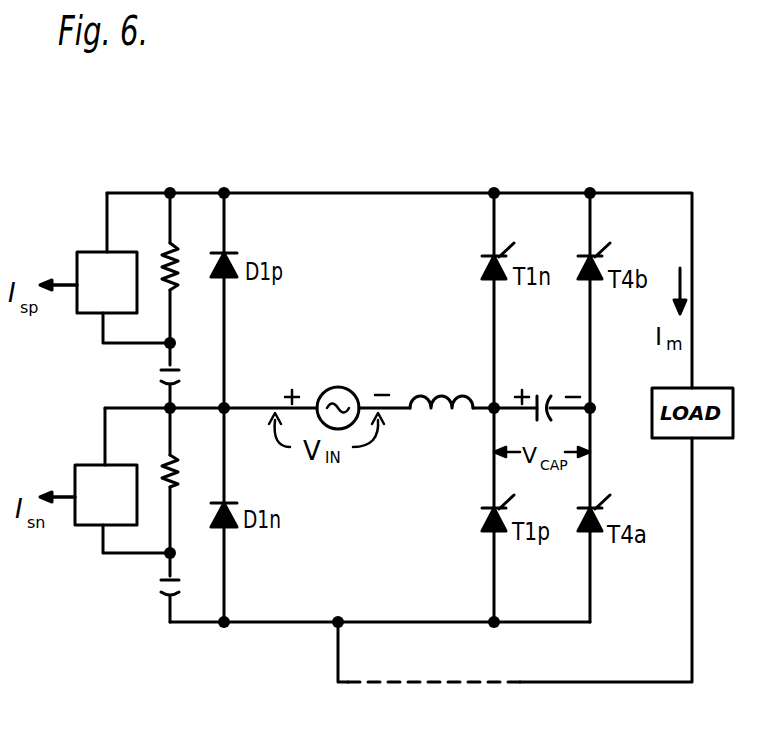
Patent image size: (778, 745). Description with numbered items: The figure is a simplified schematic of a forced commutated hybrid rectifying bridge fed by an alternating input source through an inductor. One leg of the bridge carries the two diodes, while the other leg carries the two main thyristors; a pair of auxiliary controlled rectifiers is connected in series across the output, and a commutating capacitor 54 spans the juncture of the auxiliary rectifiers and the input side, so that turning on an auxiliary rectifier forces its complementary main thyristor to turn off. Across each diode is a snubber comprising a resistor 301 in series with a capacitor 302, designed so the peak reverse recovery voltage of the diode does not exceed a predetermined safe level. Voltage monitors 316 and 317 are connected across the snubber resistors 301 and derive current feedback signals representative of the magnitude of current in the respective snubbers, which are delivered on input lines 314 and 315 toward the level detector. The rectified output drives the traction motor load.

The commutating capacitor 54 is at (550, 401).
The resistor 301 is at (165, 268).
The capacitor 302 is at (170, 378).
The input line 314 is at (72, 285).
The input line 315 is at (72, 497).
The voltage monitor 316 is at (100, 252).
The voltage monitor 317 is at (99, 465).